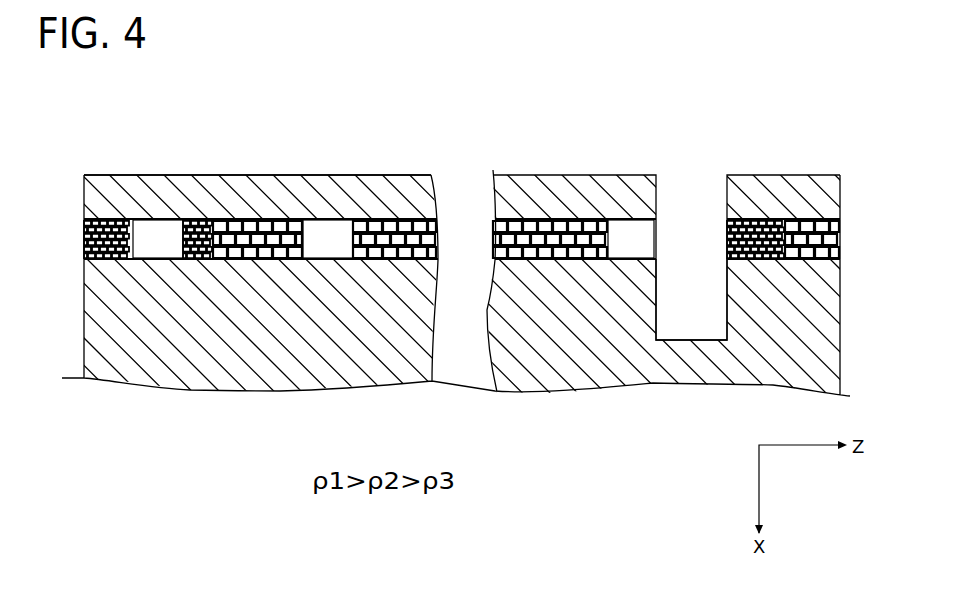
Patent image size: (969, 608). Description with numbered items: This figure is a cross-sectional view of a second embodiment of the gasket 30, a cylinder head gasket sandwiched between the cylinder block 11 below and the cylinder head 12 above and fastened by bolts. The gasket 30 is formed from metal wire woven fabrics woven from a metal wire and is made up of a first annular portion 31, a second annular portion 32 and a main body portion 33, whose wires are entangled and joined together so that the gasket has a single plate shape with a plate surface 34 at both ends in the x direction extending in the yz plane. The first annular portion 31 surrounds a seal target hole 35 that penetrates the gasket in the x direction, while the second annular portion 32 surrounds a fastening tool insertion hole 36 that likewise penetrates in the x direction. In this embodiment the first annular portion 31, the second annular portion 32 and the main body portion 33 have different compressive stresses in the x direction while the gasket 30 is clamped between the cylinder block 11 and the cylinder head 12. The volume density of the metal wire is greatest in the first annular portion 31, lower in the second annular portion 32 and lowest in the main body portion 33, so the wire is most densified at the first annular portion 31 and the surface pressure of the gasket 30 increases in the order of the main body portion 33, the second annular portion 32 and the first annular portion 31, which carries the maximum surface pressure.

The cylinder block 11 is at (223, 350).
The cylinder head 12 is at (264, 175).
The gasket 30 is at (393, 188).
The first annular portion 31 is at (150, 217).
The second annular portion 32 is at (755, 222).
The main body portion 33 is at (344, 218).
The plate surface 34 is at (526, 218).
The seal target hole 35 is at (84, 237).
The fastening tool insertion hole 36 is at (727, 243).